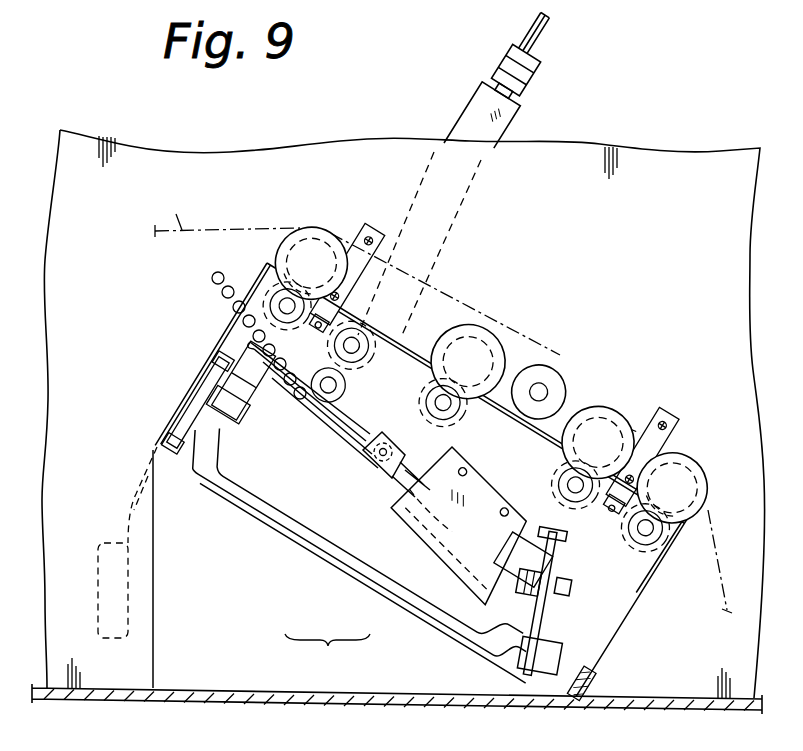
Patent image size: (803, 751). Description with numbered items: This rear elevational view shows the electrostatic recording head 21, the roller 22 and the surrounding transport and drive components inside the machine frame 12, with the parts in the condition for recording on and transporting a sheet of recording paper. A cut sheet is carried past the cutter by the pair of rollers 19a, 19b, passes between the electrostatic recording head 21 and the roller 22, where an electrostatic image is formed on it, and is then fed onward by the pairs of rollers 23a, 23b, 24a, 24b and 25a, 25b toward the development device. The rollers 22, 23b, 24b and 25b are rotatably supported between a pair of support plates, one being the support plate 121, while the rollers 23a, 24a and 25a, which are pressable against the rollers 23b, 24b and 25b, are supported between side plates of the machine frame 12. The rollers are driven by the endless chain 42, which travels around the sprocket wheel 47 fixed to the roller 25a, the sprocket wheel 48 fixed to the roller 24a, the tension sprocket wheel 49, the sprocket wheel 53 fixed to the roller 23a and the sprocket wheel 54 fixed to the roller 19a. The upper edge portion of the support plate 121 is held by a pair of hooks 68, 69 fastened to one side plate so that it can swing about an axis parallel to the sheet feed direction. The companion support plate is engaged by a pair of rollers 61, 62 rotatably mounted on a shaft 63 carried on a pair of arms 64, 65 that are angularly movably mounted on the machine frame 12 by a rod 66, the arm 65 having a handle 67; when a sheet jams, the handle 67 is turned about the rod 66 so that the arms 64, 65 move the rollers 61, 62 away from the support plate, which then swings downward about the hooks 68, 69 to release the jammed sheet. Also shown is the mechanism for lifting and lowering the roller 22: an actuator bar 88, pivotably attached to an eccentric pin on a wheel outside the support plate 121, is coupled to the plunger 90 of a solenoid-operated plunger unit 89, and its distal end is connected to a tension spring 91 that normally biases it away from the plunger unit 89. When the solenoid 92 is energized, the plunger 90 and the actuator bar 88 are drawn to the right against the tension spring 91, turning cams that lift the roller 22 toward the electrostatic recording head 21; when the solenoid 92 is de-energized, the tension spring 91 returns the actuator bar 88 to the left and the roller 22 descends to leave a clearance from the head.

The machine frame 12 is at (222, 696).
The roller 19a is at (311, 263).
The roller 19b is at (299, 284).
The electrostatic recording head 21 is at (446, 207).
The roller 22 is at (420, 483).
The roller 23a is at (468, 362).
The roller 23b is at (443, 403).
The roller 24a is at (598, 442).
The roller 24b is at (576, 485).
The roller 25a is at (672, 488).
The roller 25b is at (645, 528).
The endless chain 42 is at (443, 397).
The sprocket wheel 47 is at (672, 488).
The sprocket wheel 48 is at (642, 456).
The tension sprocket wheel 49 is at (539, 392).
The sprocket wheel 53 is at (468, 361).
The sprocket wheel 54 is at (345, 278).
The roller 61 is at (513, 597).
The roller 62 is at (242, 381).
The shaft 63 is at (355, 457).
The arm 64 is at (546, 616).
The arm 65 is at (198, 402).
The rod 66 is at (364, 550).
The handle 67 is at (108, 557).
The hook 68 is at (351, 345).
The hook 69 is at (613, 504).
The actuator bar 88 is at (332, 413).
The solenoid-operated plunger unit 89 is at (327, 655).
The plunger 90 is at (383, 480).
The tension spring 91 is at (240, 325).
The solenoid 92 is at (437, 543).
The support plate 121 is at (632, 605).